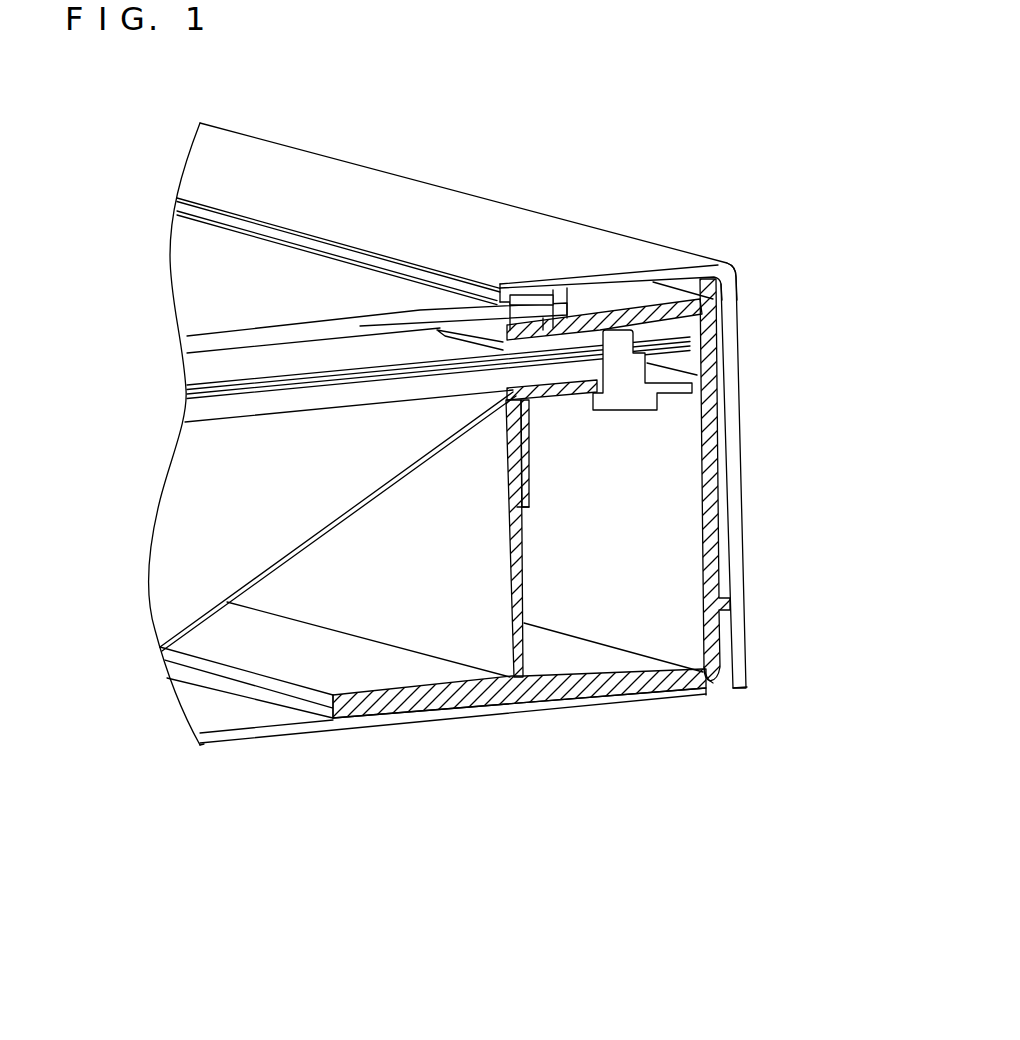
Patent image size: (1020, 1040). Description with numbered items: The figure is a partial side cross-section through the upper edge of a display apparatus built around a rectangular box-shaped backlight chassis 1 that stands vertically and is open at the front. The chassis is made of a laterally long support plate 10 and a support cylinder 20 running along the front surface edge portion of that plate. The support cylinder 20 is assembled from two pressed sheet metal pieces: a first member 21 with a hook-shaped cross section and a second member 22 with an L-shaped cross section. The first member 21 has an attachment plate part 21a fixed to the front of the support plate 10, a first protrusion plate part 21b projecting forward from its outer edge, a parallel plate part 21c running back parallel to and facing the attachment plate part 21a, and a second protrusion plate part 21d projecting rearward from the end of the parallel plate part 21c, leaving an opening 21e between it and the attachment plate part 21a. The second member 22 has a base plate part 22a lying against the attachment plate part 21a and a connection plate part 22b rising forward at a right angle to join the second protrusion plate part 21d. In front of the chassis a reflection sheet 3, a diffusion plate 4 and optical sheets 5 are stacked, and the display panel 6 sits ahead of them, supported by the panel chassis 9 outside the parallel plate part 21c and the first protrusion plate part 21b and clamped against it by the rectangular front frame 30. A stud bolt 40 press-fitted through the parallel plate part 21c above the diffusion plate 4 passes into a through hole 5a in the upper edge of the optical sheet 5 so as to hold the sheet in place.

The backlight chassis 1 is at (373, 745).
The reflection sheet 3 is at (187, 497).
The diffusion plate 4 is at (193, 410).
The optical sheet 5 is at (187, 389).
The through hole 5a is at (728, 284).
The display panel 6 is at (270, 272).
The panel chassis 9 is at (712, 332).
The support plate 10 is at (434, 717).
The support cylinder 20 is at (716, 692).
The first member 21 is at (722, 643).
The attachment plate part 21a is at (637, 690).
The first protrusion plate part 21b is at (718, 485).
The parallel plate part 21c is at (543, 390).
The second protrusion plate part 21d is at (522, 447).
The opening 21e is at (518, 507).
The second member 22 is at (350, 588).
The base plate part 22a is at (327, 668).
The connection plate part 22b is at (518, 650).
The front frame 30 is at (640, 245).
The stud bolt 40 is at (627, 368).